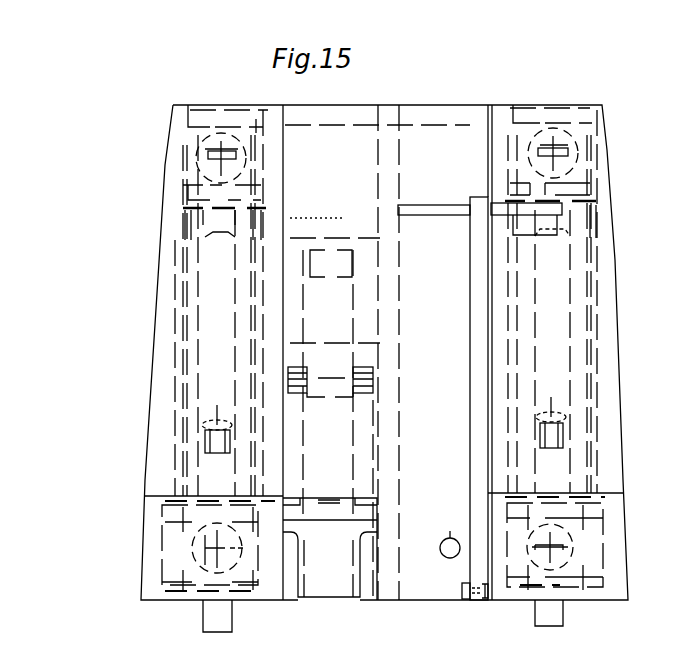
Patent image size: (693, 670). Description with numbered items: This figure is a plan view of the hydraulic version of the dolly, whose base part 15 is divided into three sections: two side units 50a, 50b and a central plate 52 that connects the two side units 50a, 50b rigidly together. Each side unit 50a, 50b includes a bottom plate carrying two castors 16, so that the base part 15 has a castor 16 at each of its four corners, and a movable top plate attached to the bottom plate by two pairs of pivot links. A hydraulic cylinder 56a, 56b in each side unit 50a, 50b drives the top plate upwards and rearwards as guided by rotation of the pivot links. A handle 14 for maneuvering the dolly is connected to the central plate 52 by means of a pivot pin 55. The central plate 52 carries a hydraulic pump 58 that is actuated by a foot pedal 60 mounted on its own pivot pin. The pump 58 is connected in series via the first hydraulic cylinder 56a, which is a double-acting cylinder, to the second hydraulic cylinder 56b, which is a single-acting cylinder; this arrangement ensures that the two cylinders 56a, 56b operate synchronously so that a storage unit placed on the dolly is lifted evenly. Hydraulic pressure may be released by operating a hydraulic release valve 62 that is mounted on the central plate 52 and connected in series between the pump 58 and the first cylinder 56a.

The handle 14 is at (466, 262).
The base part 15 is at (160, 215).
The castors 16 is at (201, 623).
The side unit 50a is at (545, 101).
The side unit 50b is at (230, 103).
The central plate 52 is at (413, 103).
The pivot pin 55 is at (473, 604).
The first hydraulic cylinder 56a is at (578, 365).
The second hydraulic cylinder 56b is at (196, 370).
The hydraulic pump 58 is at (306, 300).
The foot pedal 60 is at (362, 568).
The hydraulic release valve 62 is at (450, 564).